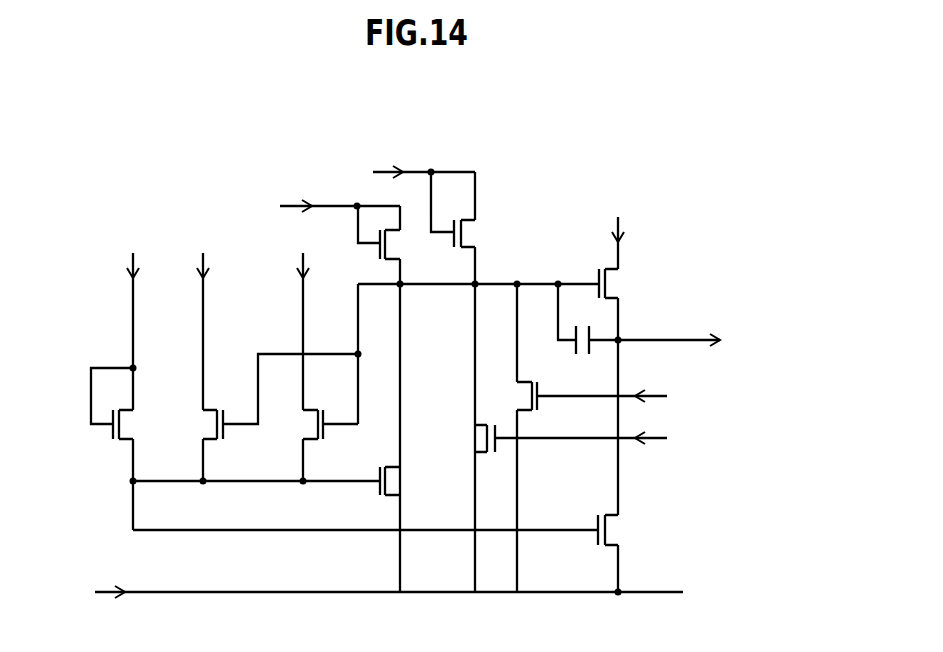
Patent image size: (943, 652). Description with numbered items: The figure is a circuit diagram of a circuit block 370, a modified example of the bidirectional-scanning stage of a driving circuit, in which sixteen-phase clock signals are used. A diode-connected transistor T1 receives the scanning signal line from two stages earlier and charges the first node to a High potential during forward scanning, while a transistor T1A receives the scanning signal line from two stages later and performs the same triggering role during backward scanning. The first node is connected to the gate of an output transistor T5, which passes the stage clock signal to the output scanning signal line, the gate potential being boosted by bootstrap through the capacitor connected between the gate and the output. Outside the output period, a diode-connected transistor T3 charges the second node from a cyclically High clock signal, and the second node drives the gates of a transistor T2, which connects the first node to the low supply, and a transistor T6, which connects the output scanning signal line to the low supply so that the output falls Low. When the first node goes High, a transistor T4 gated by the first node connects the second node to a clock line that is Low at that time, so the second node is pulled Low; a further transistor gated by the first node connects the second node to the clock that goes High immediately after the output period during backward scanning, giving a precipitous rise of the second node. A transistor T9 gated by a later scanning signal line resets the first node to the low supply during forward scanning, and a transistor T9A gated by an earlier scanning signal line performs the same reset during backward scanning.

The circuit block 370 is at (723, 128).
The transistor T1 is at (396, 232).
The transistor T1A is at (474, 211).
The transistor T2 is at (407, 482).
The transistor T3 is at (107, 414).
The transistor T4 is at (255, 398).
The transistor T5 is at (626, 283).
The transistor T6 is at (626, 530).
The transistor T9 is at (575, 396).
The transistor T9A is at (548, 438).